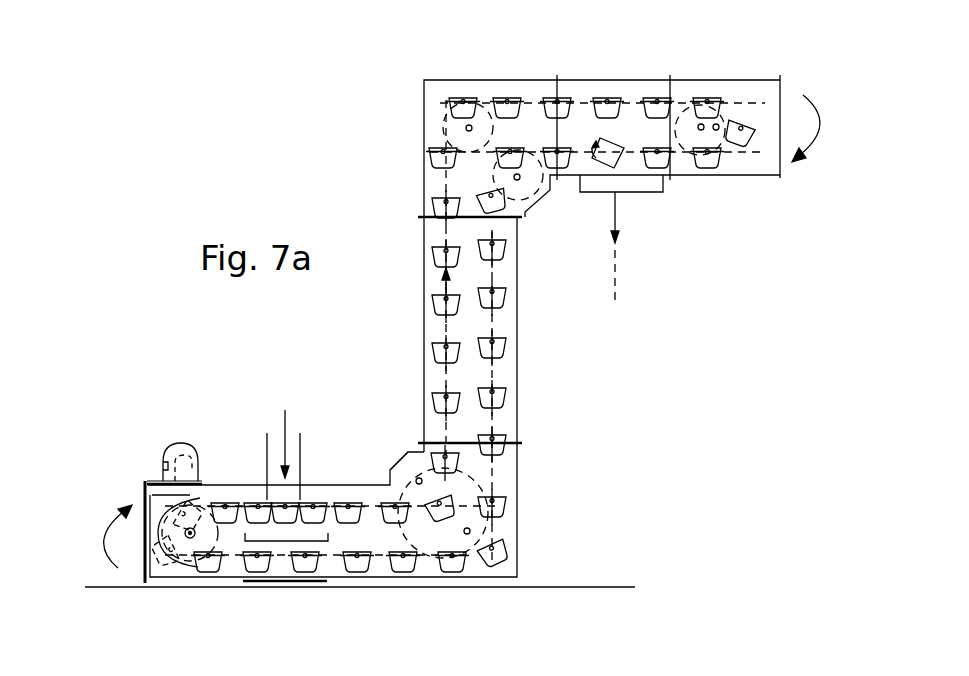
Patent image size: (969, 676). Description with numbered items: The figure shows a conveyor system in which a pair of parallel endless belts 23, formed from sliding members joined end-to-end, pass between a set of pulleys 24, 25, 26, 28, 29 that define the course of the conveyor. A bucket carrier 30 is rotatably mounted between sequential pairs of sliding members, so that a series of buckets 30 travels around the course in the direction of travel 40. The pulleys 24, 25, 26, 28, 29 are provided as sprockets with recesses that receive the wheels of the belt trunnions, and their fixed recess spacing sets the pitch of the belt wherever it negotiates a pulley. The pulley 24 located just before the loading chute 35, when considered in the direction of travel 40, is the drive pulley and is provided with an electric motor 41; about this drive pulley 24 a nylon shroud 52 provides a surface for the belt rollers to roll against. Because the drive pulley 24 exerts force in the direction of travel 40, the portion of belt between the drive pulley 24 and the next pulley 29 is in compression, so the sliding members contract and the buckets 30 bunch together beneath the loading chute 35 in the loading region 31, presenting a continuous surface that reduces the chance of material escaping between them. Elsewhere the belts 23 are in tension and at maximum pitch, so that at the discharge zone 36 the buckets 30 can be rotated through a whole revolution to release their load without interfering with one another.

The endless belts 23 is at (492, 371).
The drive pulley 24 is at (538, 195).
The pulley 25 is at (735, 110).
The pulley 26 is at (485, 103).
The pulley 28 is at (460, 556).
The pulley 29 is at (407, 463).
The bucket carrier 30 is at (446, 352).
The filling station 31 is at (302, 452).
The loading chute 35 is at (287, 431).
The discharge zone 36 is at (632, 193).
The direction of travel 40 is at (822, 125).
The electric motor 41 is at (193, 455).
The nylon shroud 52 is at (150, 498).